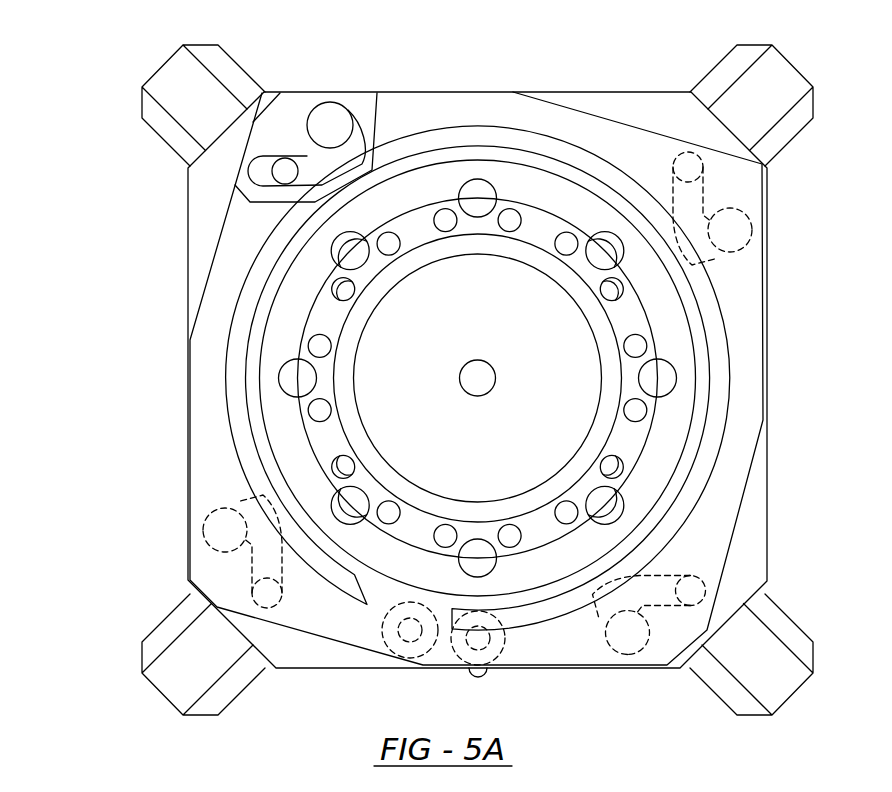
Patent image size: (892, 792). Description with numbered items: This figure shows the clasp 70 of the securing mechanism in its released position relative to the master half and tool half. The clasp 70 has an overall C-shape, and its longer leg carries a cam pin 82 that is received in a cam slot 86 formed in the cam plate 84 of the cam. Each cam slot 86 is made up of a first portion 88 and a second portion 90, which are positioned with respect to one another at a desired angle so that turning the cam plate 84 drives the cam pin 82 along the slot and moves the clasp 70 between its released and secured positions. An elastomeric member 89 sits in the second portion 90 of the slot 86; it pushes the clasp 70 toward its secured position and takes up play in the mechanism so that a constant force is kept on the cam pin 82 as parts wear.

The clasp 70 is at (146, 62).
The cam pin 82 is at (285, 171).
The cam plate 84 is at (585, 127).
The cam slot 86 is at (252, 568).
The first portion 88 is at (260, 203).
The elastomeric member 89 is at (332, 113).
The second portion 90 is at (346, 99).